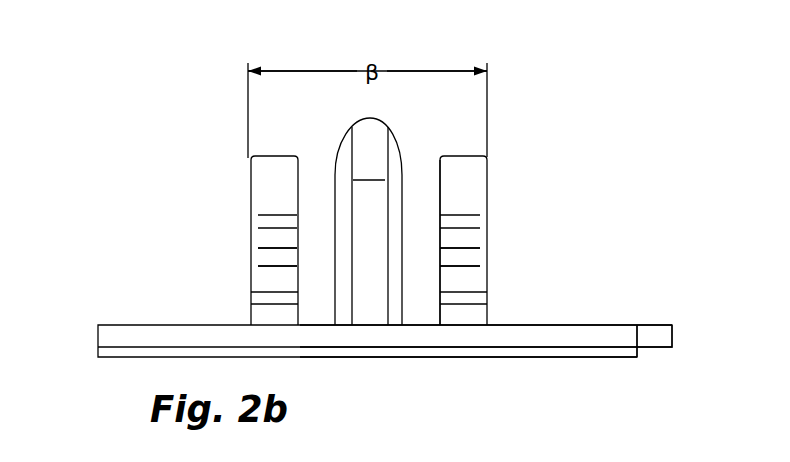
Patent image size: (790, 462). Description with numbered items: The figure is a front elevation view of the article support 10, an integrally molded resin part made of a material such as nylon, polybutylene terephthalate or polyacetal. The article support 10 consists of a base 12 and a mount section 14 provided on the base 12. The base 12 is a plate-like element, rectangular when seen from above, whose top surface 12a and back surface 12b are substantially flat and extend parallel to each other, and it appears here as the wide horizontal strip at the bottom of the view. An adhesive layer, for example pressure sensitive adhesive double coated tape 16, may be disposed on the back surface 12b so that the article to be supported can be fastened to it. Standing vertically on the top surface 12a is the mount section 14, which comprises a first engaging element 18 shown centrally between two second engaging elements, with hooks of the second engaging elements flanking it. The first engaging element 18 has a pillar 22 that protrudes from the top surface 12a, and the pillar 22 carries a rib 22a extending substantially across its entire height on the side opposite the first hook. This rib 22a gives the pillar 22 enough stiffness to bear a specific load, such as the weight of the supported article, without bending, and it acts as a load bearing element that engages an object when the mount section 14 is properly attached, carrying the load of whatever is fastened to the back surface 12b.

The article support 10 is at (200, 107).
The base 12 is at (140, 318).
The top surface 12a is at (570, 323).
The back surface 12b is at (540, 348).
The mount section 14 is at (540, 186).
The pressure sensitive adhesive double coated tape 16 is at (610, 358).
The first engaging element 18 is at (384, 112).
The pillar 22 is at (365, 268).
The rib 22a is at (382, 277).